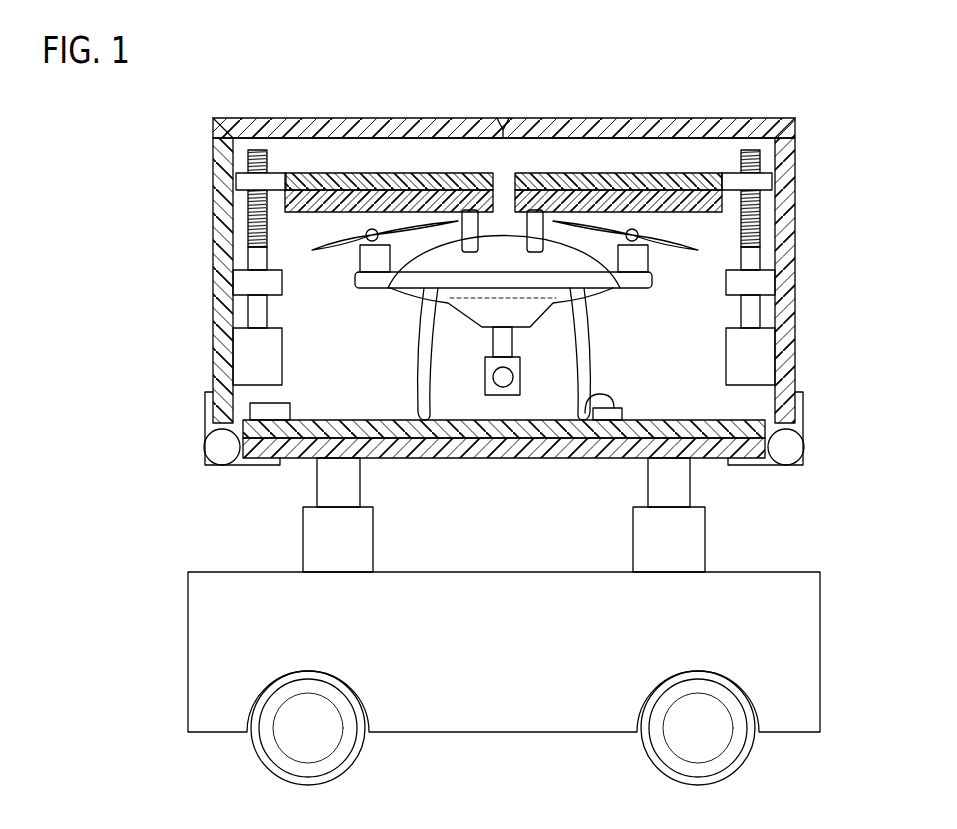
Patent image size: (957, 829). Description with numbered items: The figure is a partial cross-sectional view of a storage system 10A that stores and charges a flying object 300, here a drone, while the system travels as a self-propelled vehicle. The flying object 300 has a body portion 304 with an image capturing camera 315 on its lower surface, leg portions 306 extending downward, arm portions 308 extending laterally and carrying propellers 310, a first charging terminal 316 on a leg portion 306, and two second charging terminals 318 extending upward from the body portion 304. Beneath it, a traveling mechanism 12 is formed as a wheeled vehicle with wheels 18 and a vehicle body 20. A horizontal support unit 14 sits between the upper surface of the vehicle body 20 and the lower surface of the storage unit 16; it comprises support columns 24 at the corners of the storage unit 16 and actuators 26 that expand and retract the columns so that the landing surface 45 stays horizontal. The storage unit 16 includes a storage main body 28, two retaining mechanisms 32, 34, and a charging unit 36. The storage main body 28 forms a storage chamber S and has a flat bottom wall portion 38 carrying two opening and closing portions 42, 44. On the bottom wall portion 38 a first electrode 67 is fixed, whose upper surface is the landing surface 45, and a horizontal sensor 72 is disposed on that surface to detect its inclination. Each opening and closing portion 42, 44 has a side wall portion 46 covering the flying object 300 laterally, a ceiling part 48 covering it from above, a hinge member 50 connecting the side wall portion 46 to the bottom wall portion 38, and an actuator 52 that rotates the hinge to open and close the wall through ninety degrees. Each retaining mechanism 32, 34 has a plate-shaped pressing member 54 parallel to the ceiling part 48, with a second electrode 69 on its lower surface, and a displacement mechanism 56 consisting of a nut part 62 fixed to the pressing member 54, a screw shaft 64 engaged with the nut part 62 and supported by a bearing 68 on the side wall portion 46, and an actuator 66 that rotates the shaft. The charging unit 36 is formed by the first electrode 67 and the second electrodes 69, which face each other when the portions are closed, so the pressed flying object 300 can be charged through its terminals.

The storage system 10A is at (225, 60).
The traveling mechanism 12 is at (180, 588).
The horizontal support unit 14 is at (272, 509).
The storage unit 16 is at (200, 110).
The wheels 18 is at (267, 749).
The vehicle body 20 is at (807, 609).
The support columns 24 is at (327, 489).
The actuators 26 is at (313, 538).
The storage main body 28 is at (801, 107).
The retaining mechanism 32 is at (392, 157).
The retaining mechanism 34 is at (614, 157).
The charging unit 36 is at (708, 408).
The bottom wall portion 38 is at (504, 443).
The opening and closing portion 42 is at (473, 115).
The opening and closing portion 44 is at (533, 115).
The landing surface 45 is at (347, 419).
The side wall portion 46 is at (223, 199).
The ceiling part 48 is at (304, 124).
The hinge member 50 is at (211, 466).
The actuator 52 is at (222, 445).
The pressing member 54 is at (370, 178).
The displacement mechanism 56 is at (247, 152).
The nut part 62 is at (258, 181).
The screw shaft 64 is at (258, 229).
The actuator 66 is at (250, 356).
The first electrode 67 is at (521, 443).
The bearing 68 is at (248, 284).
The second electrode 69 is at (300, 213).
The horizontal sensor 72 is at (266, 413).
The storage chamber S is at (287, 319).
The flying object 300 is at (362, 343).
The body portion 304 is at (525, 279).
The leg portions 306 is at (425, 372).
The arm portions 308 is at (638, 281).
The propellers 310 is at (332, 251).
The image capturing camera 315 is at (486, 383).
The first charging terminal 316 is at (623, 408).
The second charging terminals 318 is at (532, 243).